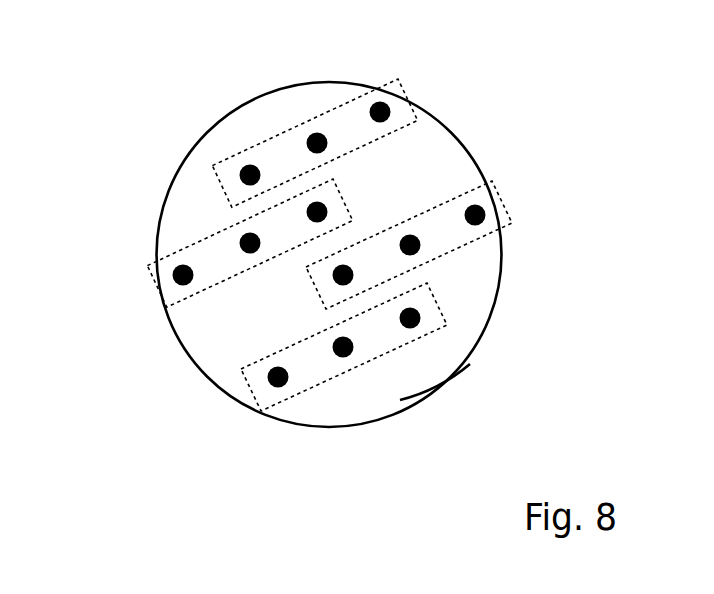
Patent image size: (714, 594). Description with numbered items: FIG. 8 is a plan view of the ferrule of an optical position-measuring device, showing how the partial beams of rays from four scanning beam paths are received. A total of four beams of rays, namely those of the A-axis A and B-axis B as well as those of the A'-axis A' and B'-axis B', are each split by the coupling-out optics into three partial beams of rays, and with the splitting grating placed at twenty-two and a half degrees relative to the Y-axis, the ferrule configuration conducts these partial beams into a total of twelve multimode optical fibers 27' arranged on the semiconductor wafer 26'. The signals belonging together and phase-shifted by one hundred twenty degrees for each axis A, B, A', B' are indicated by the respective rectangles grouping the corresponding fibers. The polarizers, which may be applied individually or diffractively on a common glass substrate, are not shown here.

The semiconductor wafer 26' is at (275, 254).
The multimode optical fibers 27' is at (460, 387).
The A-axis A is at (325, 132).
The A'-axis A' is at (263, 240).
The B-axis B is at (357, 347).
The B'-axis B' is at (427, 241).